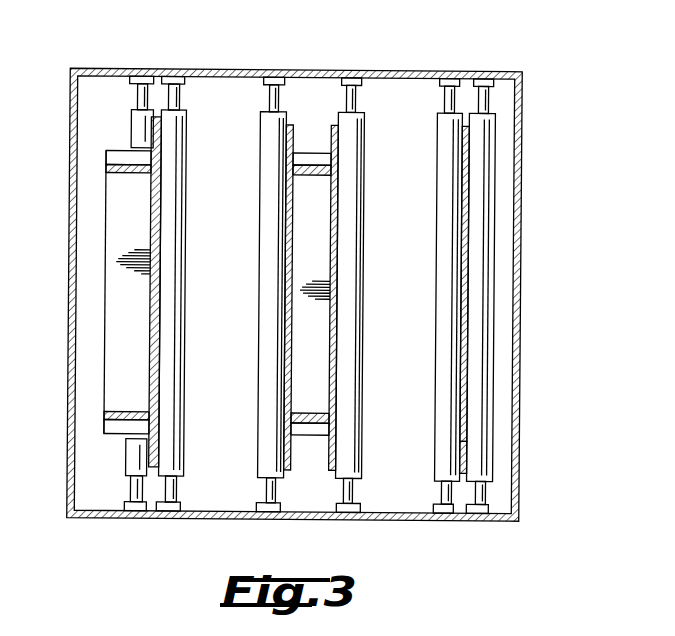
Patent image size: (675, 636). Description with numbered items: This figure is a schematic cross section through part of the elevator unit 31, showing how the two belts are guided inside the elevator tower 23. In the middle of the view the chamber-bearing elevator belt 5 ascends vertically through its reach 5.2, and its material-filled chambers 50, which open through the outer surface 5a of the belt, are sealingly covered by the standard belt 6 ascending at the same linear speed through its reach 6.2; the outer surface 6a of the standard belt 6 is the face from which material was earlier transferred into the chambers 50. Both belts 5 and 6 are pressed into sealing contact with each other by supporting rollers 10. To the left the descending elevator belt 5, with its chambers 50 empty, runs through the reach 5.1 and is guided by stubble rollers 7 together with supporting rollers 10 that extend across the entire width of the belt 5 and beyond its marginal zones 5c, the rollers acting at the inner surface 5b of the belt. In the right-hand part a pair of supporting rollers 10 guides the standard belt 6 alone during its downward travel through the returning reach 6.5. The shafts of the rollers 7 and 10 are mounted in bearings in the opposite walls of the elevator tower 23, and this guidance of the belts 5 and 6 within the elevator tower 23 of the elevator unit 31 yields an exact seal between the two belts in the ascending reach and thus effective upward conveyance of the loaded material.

The elevator belt 5 is at (97, 277).
The reach of elevator belt 5.1 is at (112, 163).
The ascending reach of elevator belt 5.2 is at (305, 152).
The outer surface of elevator belt 5a is at (104, 390).
The inner surface of elevator belt 5b is at (282, 383).
The marginal zones of elevator belt 5c is at (284, 144).
The standard belt 6 is at (323, 129).
The ascending reach of standard belt 6.2 is at (332, 472).
The returning reach of standard belt 6.5 is at (465, 440).
The outer surface of standard belt 6a is at (480, 170).
The stubble rollers 7 is at (136, 135).
The supporting rollers 10 is at (261, 130).
The elevator tower 23 is at (517, 379).
The elevator unit 31 is at (572, 90).
The chambers 50 is at (113, 338).